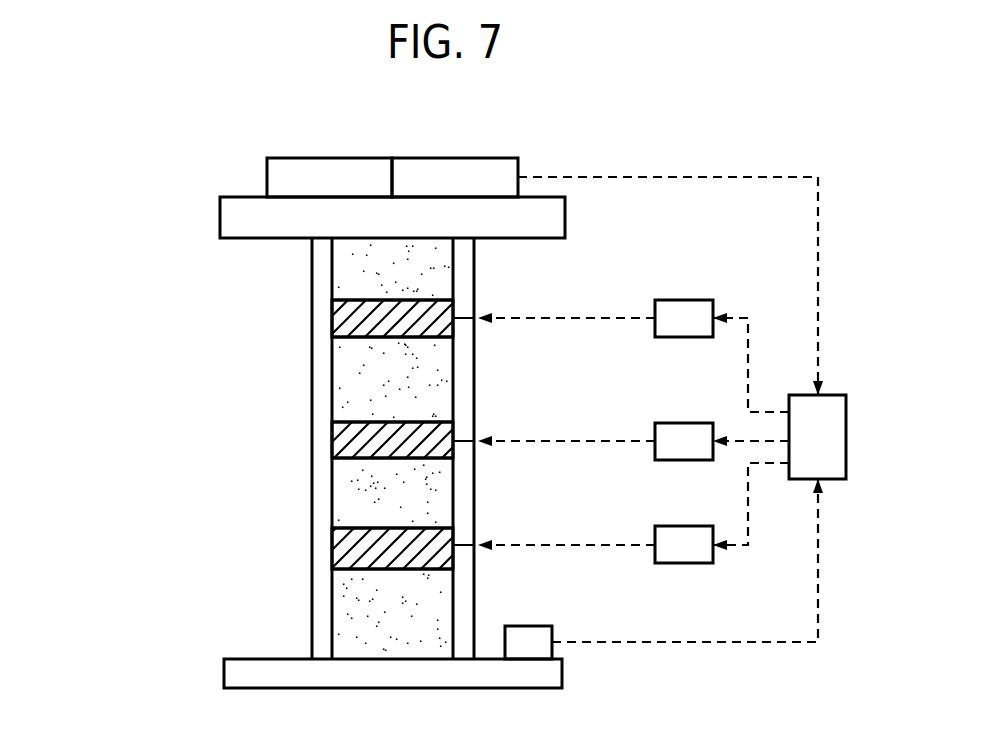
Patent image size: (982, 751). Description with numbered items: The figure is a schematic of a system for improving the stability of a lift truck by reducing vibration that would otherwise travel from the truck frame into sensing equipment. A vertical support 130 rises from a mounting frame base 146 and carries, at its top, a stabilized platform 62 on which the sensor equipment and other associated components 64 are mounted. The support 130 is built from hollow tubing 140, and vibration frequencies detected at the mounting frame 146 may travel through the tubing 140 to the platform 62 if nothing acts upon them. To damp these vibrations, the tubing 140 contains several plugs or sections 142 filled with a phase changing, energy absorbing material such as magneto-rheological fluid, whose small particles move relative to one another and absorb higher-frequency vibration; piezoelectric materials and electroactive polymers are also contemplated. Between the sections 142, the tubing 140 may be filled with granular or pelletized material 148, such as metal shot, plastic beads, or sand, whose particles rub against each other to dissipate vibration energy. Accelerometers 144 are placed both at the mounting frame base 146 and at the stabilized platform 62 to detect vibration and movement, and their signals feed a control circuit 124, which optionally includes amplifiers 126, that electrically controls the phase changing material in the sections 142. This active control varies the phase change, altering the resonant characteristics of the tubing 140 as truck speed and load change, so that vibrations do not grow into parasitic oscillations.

The vertical support 130 is at (108, 326).
The platform 62 is at (220, 218).
The components 64 is at (330, 158).
The accelerometer 144 is at (455, 158).
The mounting frame base 146 is at (224, 675).
The hollow tubing 140 is at (312, 548).
The granular or pelletized material 148 is at (417, 278).
The sections 142 is at (393, 530).
The amplifier 126 is at (685, 300).
The control circuit 124 is at (846, 440).